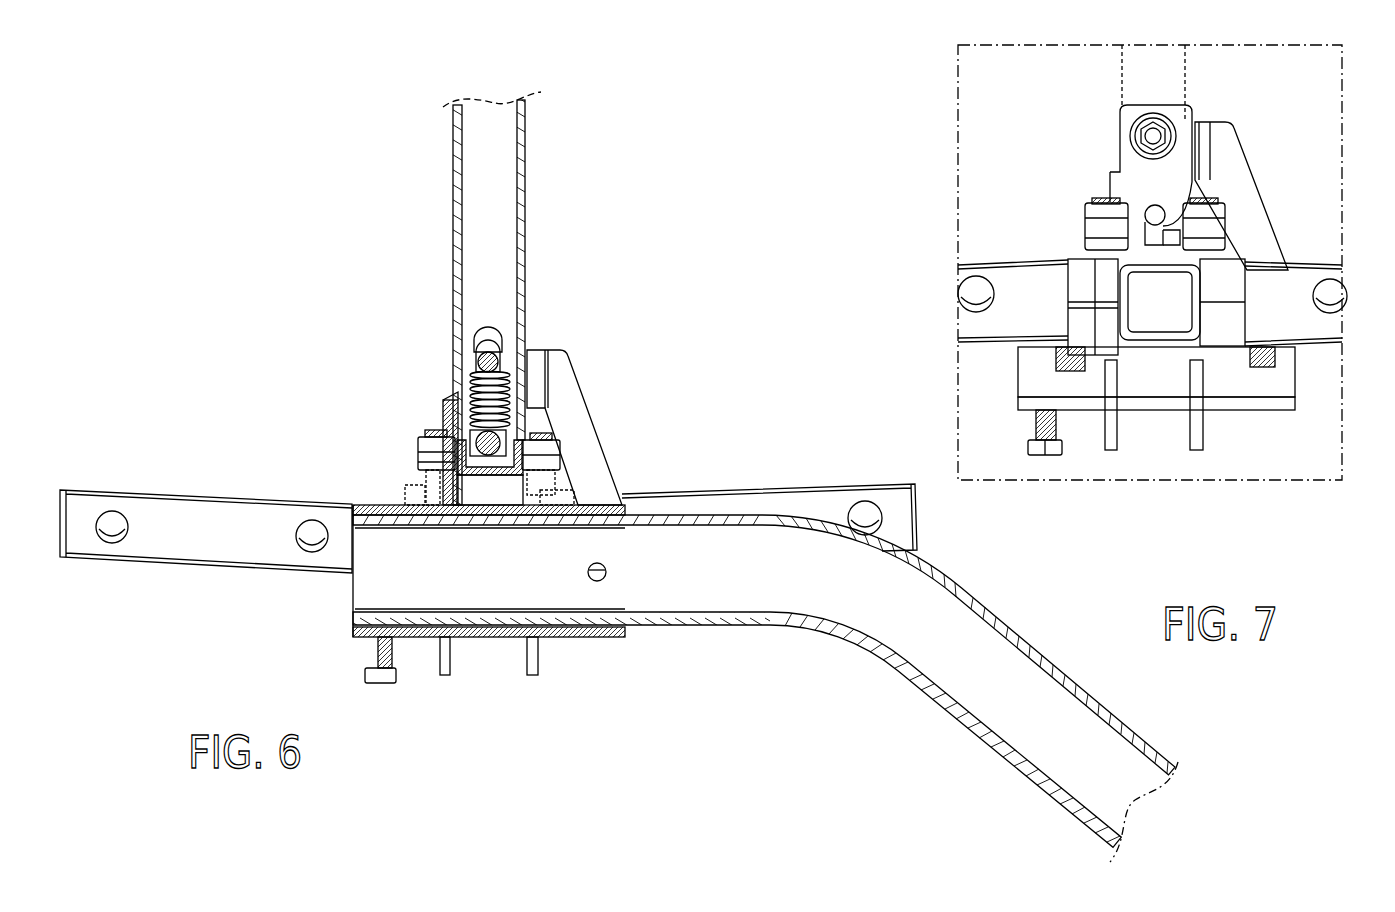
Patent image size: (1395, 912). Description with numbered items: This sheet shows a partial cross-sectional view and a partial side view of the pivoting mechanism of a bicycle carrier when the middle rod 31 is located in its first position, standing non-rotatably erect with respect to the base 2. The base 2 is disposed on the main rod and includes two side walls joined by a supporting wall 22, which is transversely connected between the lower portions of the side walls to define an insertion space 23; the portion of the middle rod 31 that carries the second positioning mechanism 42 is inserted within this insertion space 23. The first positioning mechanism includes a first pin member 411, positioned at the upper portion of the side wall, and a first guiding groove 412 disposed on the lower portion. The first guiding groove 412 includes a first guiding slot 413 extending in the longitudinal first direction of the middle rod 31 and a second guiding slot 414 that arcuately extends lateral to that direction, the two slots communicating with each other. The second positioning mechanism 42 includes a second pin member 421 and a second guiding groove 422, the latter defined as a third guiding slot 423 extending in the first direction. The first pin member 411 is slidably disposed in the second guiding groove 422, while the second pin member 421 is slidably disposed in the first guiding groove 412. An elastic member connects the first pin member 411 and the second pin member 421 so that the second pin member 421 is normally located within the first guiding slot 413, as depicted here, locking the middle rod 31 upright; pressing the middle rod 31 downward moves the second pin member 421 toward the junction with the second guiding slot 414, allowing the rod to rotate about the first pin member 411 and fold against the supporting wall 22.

In FIG. 6, the middle rod 31 is at (526, 152).
In FIG. 6, the first pin member 411 is at (505, 345).
In FIG. 6, the second positioning mechanism 42 is at (369, 384).
In FIG. 6, the second guiding groove 422 is at (478, 340).
In FIG. 6, the second pin member 421 is at (470, 436).
In FIG. 7, the second pin member 421 is at (1163, 208).
In FIG. 6, the insertion space 23 is at (496, 492).
In FIG. 7, the third guiding slot 423 is at (1150, 118).
In FIG. 7, the supporting wall 22 is at (1108, 183).
In FIG. 7, the base 2 is at (1109, 294).
In FIG. 7, the first guiding slot 413 is at (1156, 232).
In FIG. 7, the second guiding slot 414 is at (1171, 240).
In FIG. 7, the first guiding groove 412 is at (1157, 405).